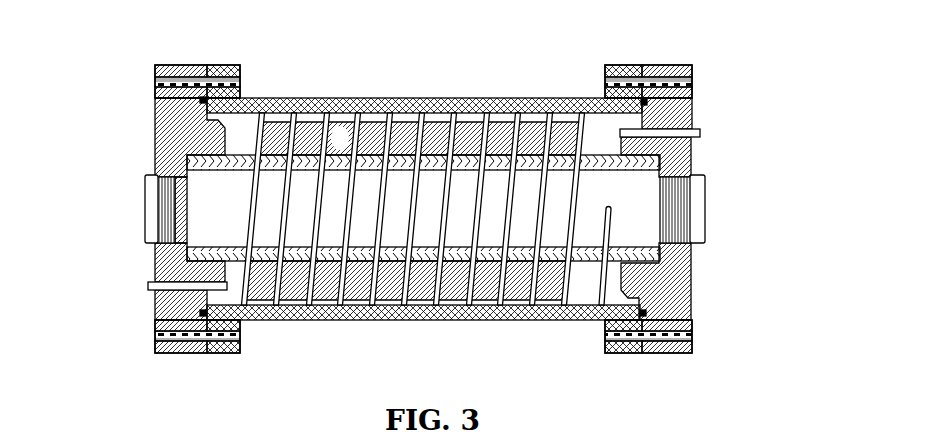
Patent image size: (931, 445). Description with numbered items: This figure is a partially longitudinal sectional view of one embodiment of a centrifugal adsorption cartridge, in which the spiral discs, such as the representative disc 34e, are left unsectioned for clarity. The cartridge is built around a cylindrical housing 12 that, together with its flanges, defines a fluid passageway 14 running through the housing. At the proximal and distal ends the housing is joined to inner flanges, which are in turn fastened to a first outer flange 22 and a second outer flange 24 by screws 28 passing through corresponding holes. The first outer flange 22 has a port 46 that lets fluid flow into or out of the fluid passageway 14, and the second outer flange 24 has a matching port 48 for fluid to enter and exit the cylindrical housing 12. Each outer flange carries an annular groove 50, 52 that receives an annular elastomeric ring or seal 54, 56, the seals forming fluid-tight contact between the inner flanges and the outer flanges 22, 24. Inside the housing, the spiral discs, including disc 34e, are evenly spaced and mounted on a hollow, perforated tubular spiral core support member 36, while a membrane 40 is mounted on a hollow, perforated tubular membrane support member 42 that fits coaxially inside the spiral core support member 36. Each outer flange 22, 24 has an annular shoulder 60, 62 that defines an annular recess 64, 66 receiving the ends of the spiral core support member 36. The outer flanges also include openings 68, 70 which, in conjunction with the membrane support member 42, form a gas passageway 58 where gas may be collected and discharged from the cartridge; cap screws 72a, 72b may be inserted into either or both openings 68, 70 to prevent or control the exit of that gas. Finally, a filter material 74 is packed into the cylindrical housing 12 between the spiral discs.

The cylindrical housing 12 is at (457, 320).
The fluid passageway 14 is at (337, 135).
The first outer flange 22 is at (155, 312).
The second outer flange 24 is at (690, 278).
The screws 28 is at (607, 67).
The spiral disc 34e is at (378, 213).
The spiral core support member 36 is at (508, 153).
The membrane 40 is at (470, 153).
The membrane support member 42 is at (613, 172).
The port 46 is at (147, 287).
The port 48 is at (700, 132).
The annular groove 50 is at (201, 97).
The annular groove 52 is at (645, 103).
The seal 54 is at (202, 101).
The seal 56 is at (650, 102).
The gas passageway 58 is at (290, 205).
The annular shoulder 60 is at (205, 146).
The annular shoulder 62 is at (642, 275).
The annular recess 64 is at (157, 248).
The annular recess 66 is at (645, 228).
The opening 68 is at (155, 192).
The opening 70 is at (690, 190).
The cap screw 72a is at (143, 215).
The cap screw 72b is at (705, 215).
The filter material 74 is at (543, 130).